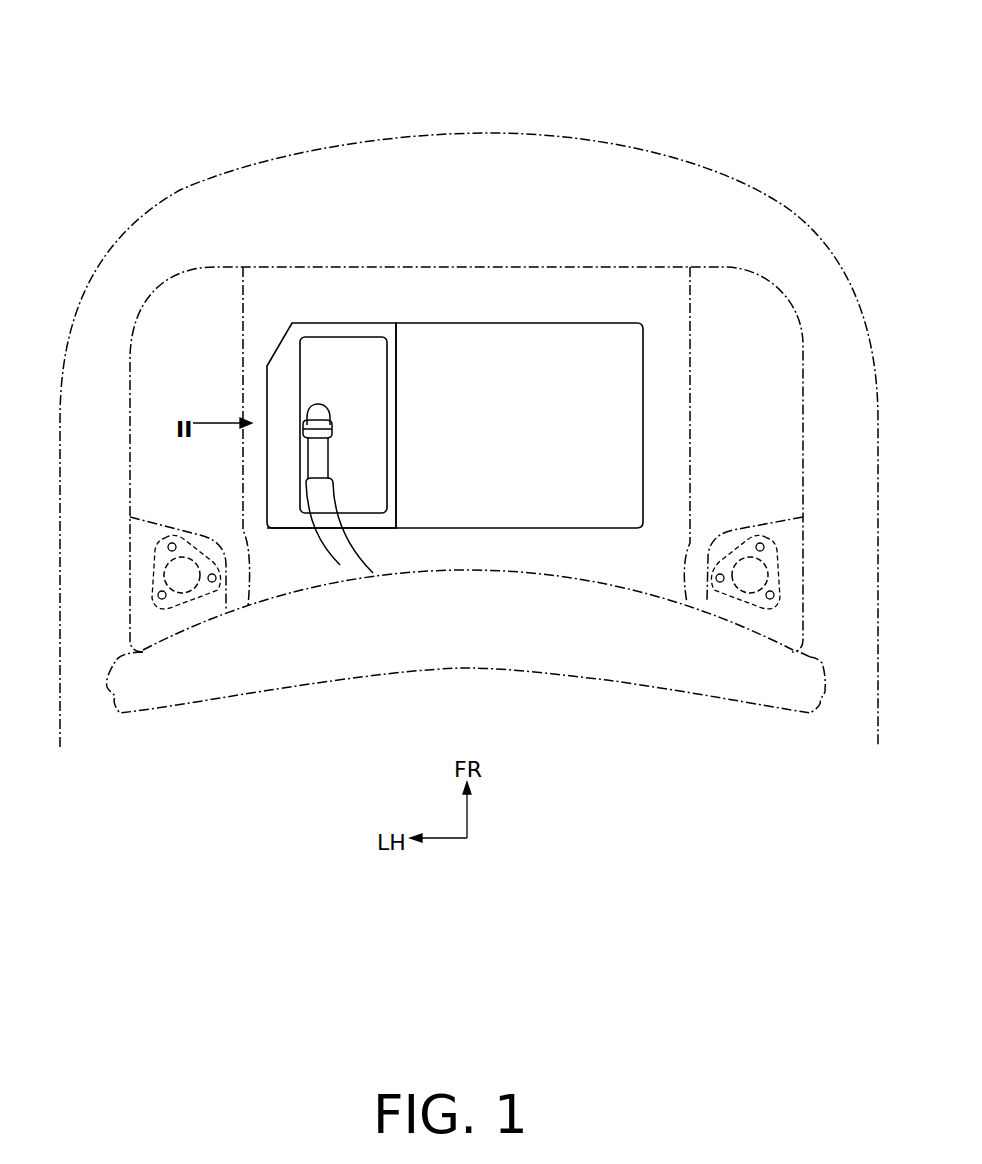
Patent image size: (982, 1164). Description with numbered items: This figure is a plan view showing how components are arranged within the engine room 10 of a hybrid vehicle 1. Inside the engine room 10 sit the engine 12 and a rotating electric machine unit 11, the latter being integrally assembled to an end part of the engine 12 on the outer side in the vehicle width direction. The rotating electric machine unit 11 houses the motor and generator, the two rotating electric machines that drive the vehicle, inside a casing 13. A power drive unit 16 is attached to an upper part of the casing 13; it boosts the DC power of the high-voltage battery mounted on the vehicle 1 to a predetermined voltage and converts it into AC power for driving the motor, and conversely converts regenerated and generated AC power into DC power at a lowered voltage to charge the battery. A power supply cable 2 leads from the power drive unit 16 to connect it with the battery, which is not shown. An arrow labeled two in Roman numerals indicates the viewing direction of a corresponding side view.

The vehicle 1 is at (657, 124).
The engine room 10 is at (747, 310).
The rotating electric machine unit 11 is at (302, 532).
The engine 12 is at (560, 517).
The casing 13 is at (267, 387).
The power drive unit 16 is at (310, 343).
The power supply cable 2 is at (335, 565).